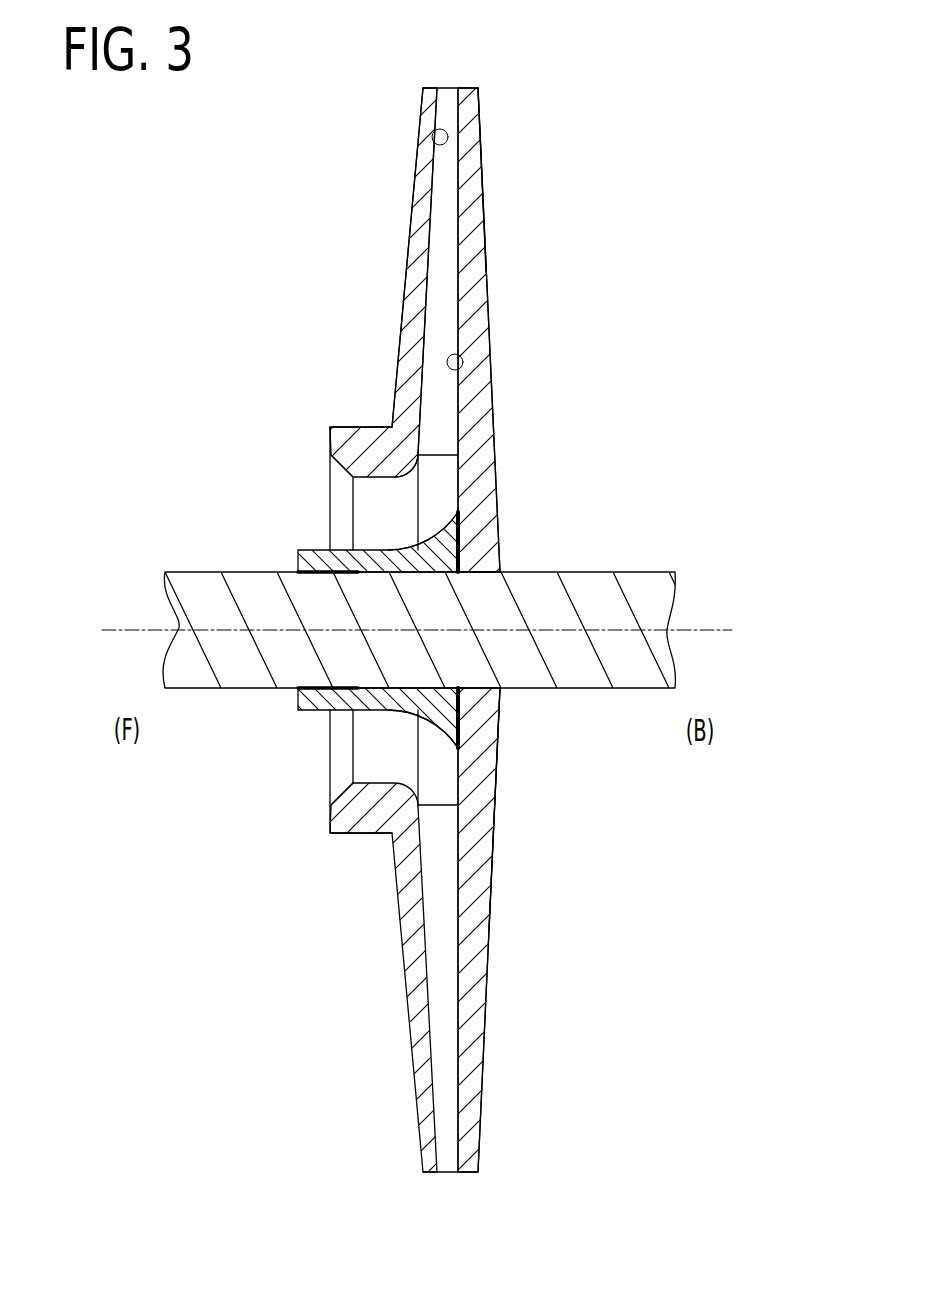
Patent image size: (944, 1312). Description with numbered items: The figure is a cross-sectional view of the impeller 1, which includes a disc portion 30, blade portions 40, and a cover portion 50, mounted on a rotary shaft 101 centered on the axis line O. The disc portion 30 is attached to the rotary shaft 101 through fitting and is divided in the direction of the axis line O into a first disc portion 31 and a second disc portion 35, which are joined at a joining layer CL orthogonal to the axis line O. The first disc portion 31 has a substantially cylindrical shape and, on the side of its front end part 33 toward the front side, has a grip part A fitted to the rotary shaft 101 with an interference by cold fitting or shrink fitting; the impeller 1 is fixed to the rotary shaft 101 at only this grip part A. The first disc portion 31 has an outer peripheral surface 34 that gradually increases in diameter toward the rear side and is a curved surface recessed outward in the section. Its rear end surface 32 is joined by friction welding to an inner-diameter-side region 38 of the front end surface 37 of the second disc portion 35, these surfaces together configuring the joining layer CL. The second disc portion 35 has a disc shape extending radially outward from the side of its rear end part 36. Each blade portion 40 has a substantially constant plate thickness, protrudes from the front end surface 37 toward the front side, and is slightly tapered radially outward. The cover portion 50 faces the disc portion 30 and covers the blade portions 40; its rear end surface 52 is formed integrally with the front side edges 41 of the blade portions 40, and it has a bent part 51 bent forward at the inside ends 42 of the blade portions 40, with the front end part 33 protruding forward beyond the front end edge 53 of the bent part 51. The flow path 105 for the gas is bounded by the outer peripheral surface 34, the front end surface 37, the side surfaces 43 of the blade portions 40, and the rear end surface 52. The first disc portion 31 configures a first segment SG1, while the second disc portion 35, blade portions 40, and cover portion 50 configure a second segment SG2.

The impeller 1 is at (518, 115).
The disc portion 30 is at (498, 272).
The first disc portion 31 is at (374, 538).
The rear end surface 32 is at (461, 523).
The front end part 33 is at (300, 562).
The outer peripheral surface 34 is at (441, 522).
The second disc portion 35 is at (505, 410).
The rear end part 36 is at (466, 547).
The front end surface 37 is at (463, 360).
The inner-diameter-side region 38 is at (498, 722).
The blade portion 40 is at (445, 78).
The front side edge 41 is at (412, 252).
The inside end 42 is at (399, 458).
The side surface 43 is at (438, 345).
The cover portion 50 is at (400, 198).
The bent part 51 is at (345, 427).
The rear end surface 52 is at (433, 142).
The front end edge 53 is at (331, 443).
The rotary shaft 101 is at (200, 572).
The flow path 105 is at (440, 308).
The joining layer CL is at (500, 553).
The axis line O is at (122, 630).
The grip part A is at (320, 712).
The first segment SG1 is at (305, 713).
The second segment SG2 is at (495, 883).